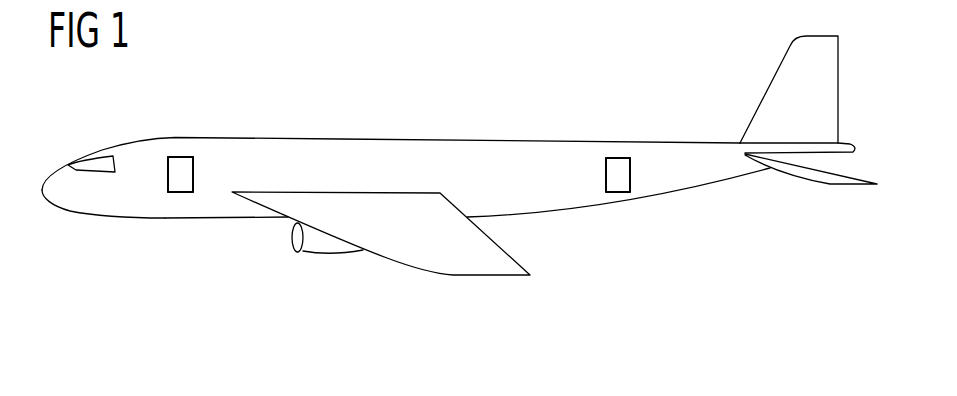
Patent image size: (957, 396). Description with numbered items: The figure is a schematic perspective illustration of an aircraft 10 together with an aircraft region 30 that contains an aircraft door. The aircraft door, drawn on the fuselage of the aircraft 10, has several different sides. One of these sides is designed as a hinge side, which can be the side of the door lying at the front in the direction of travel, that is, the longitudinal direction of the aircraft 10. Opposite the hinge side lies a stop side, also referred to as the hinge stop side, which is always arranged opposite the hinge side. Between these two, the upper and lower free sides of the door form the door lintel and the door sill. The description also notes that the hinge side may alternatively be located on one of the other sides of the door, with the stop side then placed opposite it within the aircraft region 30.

The aircraft 10 is at (353, 145).
The aircraft region 30 is at (132, 248).